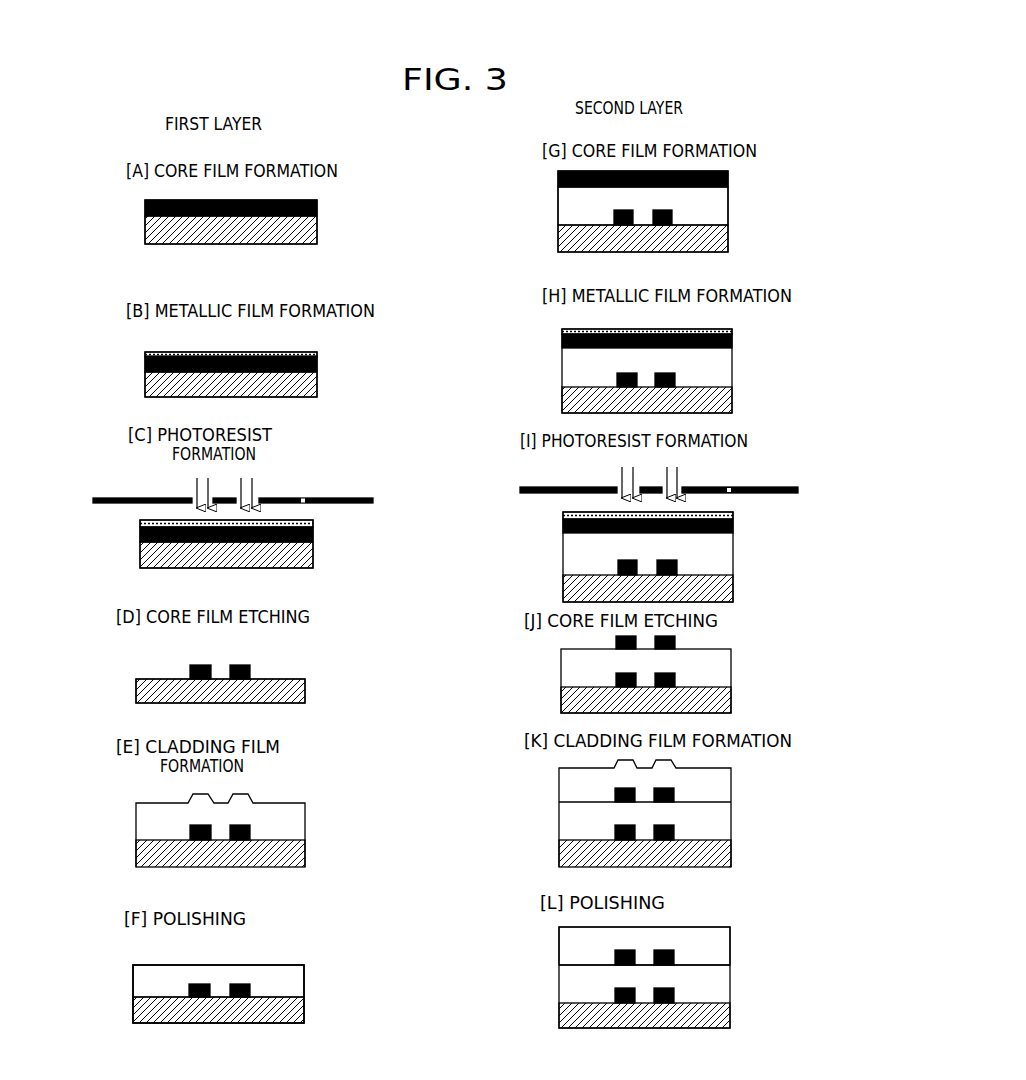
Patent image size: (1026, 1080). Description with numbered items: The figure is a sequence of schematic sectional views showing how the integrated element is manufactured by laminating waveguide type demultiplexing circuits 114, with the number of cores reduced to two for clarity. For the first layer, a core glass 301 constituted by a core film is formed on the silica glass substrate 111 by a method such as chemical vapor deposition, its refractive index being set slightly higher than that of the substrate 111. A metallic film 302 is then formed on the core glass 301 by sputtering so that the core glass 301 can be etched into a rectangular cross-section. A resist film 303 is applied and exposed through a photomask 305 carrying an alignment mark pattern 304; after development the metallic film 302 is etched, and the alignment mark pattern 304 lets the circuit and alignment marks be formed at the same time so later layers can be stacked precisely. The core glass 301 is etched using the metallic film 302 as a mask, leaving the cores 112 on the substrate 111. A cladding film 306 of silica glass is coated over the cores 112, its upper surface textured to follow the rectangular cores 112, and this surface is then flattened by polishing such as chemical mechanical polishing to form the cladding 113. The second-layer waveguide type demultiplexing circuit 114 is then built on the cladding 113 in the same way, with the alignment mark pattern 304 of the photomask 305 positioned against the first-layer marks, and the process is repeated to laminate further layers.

The substrate 111 is at (317, 236).
The core 112 is at (250, 668).
The cladding 113 is at (728, 207).
The waveguide type demultiplexing circuit 114 is at (305, 978).
The core glass 301 is at (317, 208).
The metallic film 302 is at (317, 352).
The resist film 303 is at (140, 520).
The alignment mark pattern 304 is at (303, 498).
The photomask 305 is at (373, 500).
The cladding film 306 is at (290, 824).